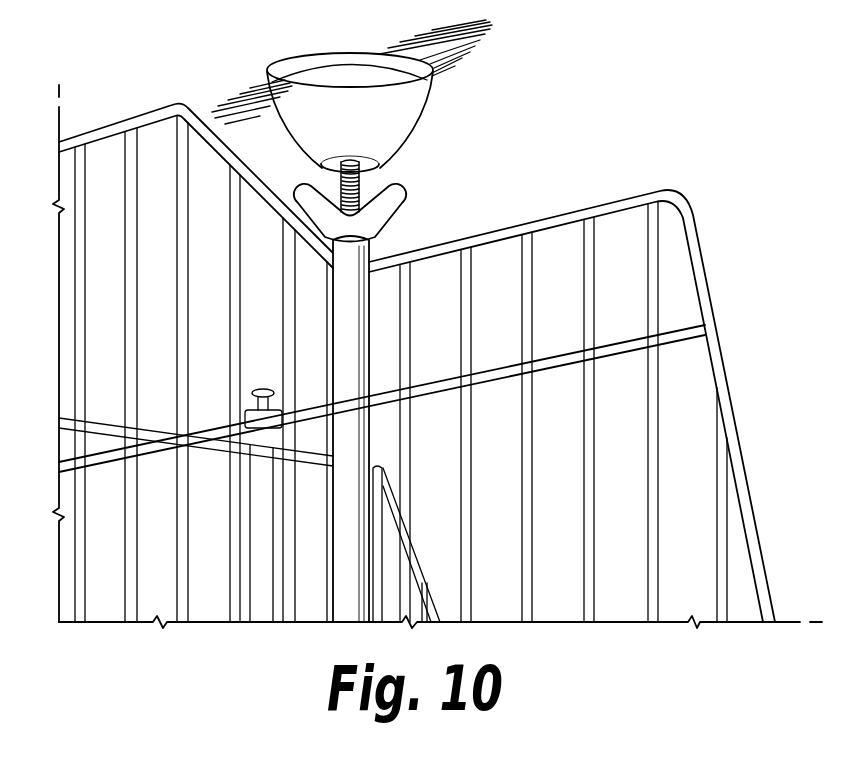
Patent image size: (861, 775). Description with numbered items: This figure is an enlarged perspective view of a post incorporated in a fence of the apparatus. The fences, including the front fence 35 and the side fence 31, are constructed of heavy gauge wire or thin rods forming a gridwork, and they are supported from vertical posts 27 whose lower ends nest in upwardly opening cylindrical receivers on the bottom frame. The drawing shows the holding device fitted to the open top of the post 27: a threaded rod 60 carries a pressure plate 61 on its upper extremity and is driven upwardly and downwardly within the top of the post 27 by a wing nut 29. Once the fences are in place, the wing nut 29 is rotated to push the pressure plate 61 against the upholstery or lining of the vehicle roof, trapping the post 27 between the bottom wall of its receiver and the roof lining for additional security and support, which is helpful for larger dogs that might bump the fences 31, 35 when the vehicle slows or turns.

The vertical post 27 is at (350, 332).
The wing nut 29 is at (400, 217).
The side fence 31 is at (712, 267).
The front fence 35 is at (420, 563).
The threaded rod 60 is at (360, 187).
The pressure plate 61 is at (407, 125).